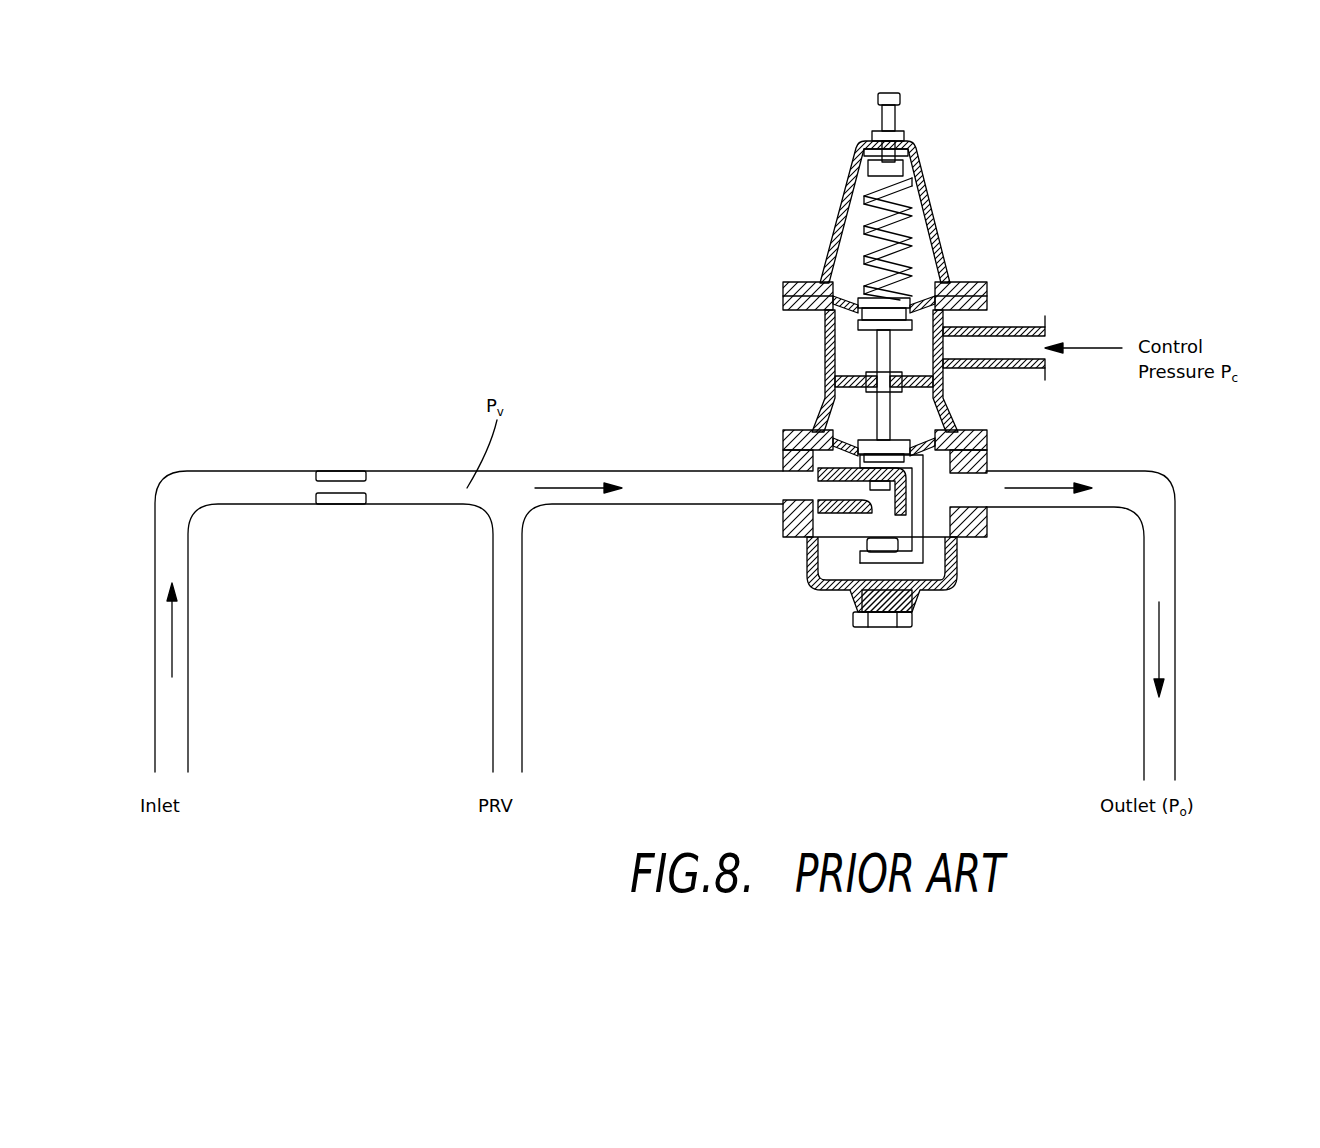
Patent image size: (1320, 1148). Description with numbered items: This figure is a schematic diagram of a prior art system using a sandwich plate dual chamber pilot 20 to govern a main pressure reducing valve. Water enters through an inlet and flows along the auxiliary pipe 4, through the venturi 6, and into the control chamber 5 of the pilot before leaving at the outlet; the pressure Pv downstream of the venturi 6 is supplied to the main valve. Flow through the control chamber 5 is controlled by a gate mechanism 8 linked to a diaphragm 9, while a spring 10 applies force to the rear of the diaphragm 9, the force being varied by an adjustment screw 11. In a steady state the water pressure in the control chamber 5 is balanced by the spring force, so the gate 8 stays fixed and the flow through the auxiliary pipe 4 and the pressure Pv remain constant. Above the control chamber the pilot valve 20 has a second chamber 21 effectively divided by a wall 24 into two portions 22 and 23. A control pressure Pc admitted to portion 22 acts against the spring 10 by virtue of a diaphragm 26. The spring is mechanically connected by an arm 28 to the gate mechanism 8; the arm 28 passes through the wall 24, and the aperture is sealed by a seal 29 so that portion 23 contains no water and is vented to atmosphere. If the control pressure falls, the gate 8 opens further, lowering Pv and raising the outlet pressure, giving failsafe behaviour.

The auxiliary pipe 4 is at (1177, 490).
The control chamber 5 is at (940, 568).
The venturi 6 is at (358, 471).
The gate mechanism 8 is at (867, 560).
The diaphragm 9 is at (985, 442).
The spring 10 is at (905, 228).
The adjustment screw 11 is at (902, 98).
The sandwich plate dual chamber pilot 20 is at (995, 162).
The second chamber 21 is at (800, 359).
The portion of second chamber 22 is at (850, 342).
The portion of second chamber 23 is at (855, 393).
The wall 24 is at (945, 382).
The diaphragm 26 is at (940, 292).
The arm 28 is at (940, 402).
The seal 29 is at (900, 372).